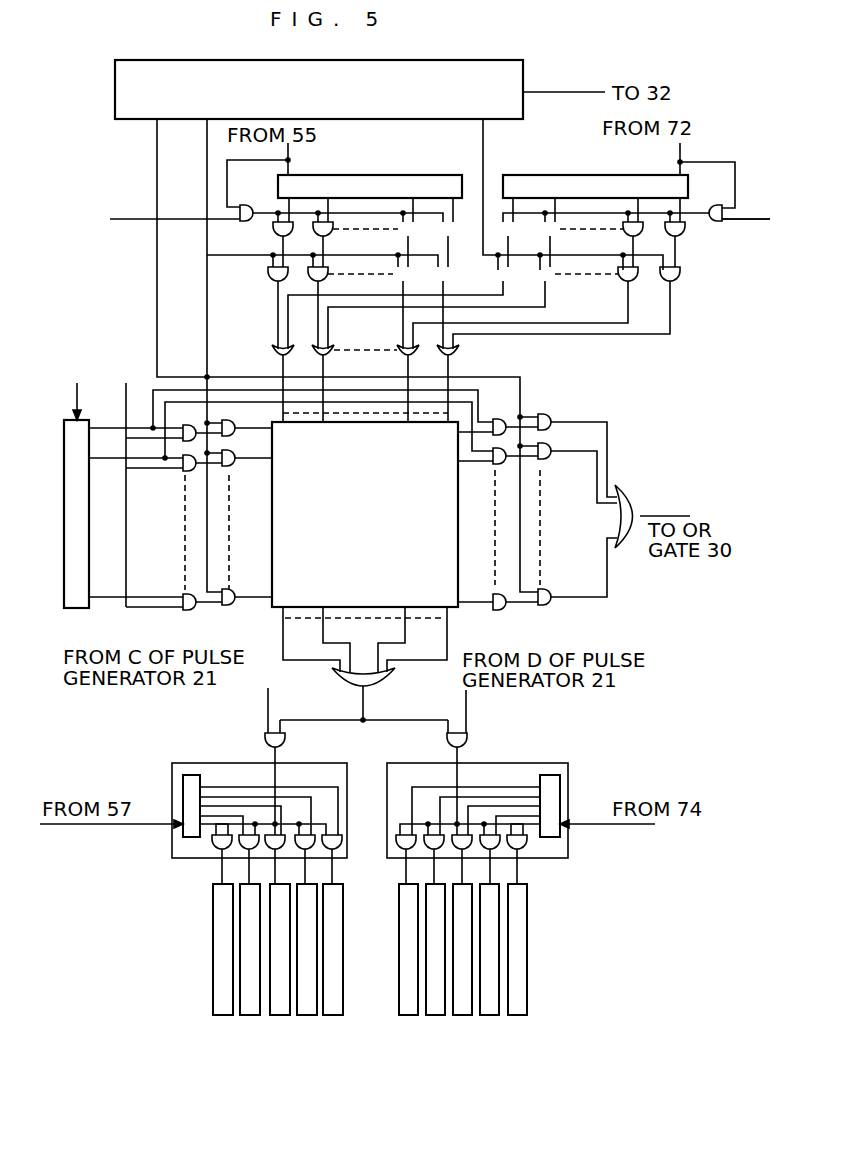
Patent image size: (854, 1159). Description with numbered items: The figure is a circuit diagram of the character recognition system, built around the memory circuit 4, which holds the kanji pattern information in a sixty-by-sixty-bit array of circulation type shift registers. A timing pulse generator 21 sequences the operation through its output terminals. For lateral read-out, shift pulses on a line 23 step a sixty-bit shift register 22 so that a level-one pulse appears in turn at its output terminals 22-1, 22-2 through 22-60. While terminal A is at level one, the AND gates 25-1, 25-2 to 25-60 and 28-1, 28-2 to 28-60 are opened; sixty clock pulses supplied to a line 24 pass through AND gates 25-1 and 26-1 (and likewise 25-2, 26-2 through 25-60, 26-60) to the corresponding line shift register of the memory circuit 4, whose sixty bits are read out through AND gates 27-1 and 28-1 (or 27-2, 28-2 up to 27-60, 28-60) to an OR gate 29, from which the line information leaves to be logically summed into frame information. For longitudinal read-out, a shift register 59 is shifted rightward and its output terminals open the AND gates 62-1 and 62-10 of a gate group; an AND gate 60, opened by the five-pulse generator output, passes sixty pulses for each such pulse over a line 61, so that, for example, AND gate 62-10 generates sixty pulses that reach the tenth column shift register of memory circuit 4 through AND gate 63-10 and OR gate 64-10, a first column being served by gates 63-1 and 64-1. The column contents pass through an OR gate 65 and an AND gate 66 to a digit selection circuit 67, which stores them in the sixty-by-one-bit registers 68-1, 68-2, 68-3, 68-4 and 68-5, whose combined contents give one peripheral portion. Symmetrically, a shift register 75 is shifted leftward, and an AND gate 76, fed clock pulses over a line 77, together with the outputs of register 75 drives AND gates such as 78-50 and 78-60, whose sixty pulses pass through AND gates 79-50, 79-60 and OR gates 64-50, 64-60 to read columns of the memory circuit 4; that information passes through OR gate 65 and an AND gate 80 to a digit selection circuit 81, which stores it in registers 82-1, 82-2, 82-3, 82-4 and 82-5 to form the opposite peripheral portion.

The timing pulse generator 21 is at (114, 87).
The shift register 22 is at (64, 525).
The line 23 is at (78, 381).
The line 24 is at (126, 381).
The memory circuit 4 is at (365, 514).
The shift register 59 is at (389, 174).
The AND gate 60 is at (247, 205).
The line 61 is at (124, 219).
The AND gate 62-1 is at (274, 230).
The AND gate 62-10 is at (332, 232).
The AND gate 63-1 is at (268, 276).
The AND gate 63-10 is at (326, 277).
The OR gate 64-1 is at (272, 353).
The OR gate 64-10 is at (333, 355).
The OR gate 64-50 is at (403, 345).
The OR gate 64-60 is at (459, 354).
The shift register 75 is at (595, 174).
The AND gate 76 is at (716, 205).
The line 77 is at (758, 222).
The AND gate 78-50 is at (628, 234).
The AND gate 78-60 is at (679, 238).
The AND gate 79-50 is at (624, 279).
The AND gate 79-60 is at (679, 279).
The first output terminal 22-1 is at (136, 417).
The second output terminal 22-2 is at (136, 448).
The sixtieth output terminal 22-60 is at (107, 600).
The AND gate 25-1 is at (191, 428).
The AND gate 25-2 is at (185, 470).
The AND gate 25-60 is at (183, 614).
The AND gate 26-1 is at (238, 422).
The AND gate 26-2 is at (233, 468).
The AND gate 26-60 is at (233, 604).
The AND gate 27-1 is at (500, 419).
The AND gate 27-2 is at (501, 464).
The AND gate 27-60 is at (501, 608).
The AND gate 28-1 is at (549, 416).
The AND gate 28-2 is at (543, 460).
The AND gate 28-60 is at (544, 604).
The OR gate 29 is at (636, 498).
The OR gate 65 is at (373, 687).
The AND gate 66 is at (263, 743).
The digit selection circuit 67 is at (183, 763).
The AND gate 80 is at (467, 744).
The digit selection circuit 81 is at (547, 763).
The register 68-1 is at (213, 962).
The register 68-2 is at (243, 987).
The register 68-3 is at (270, 1005).
The register 68-4 is at (306, 1016).
The register 68-5 is at (333, 1016).
The register 82-1 is at (525, 955).
The register 82-2 is at (499, 985).
The register 82-3 is at (463, 1016).
The register 82-4 is at (428, 985).
The register 82-5 is at (399, 954).